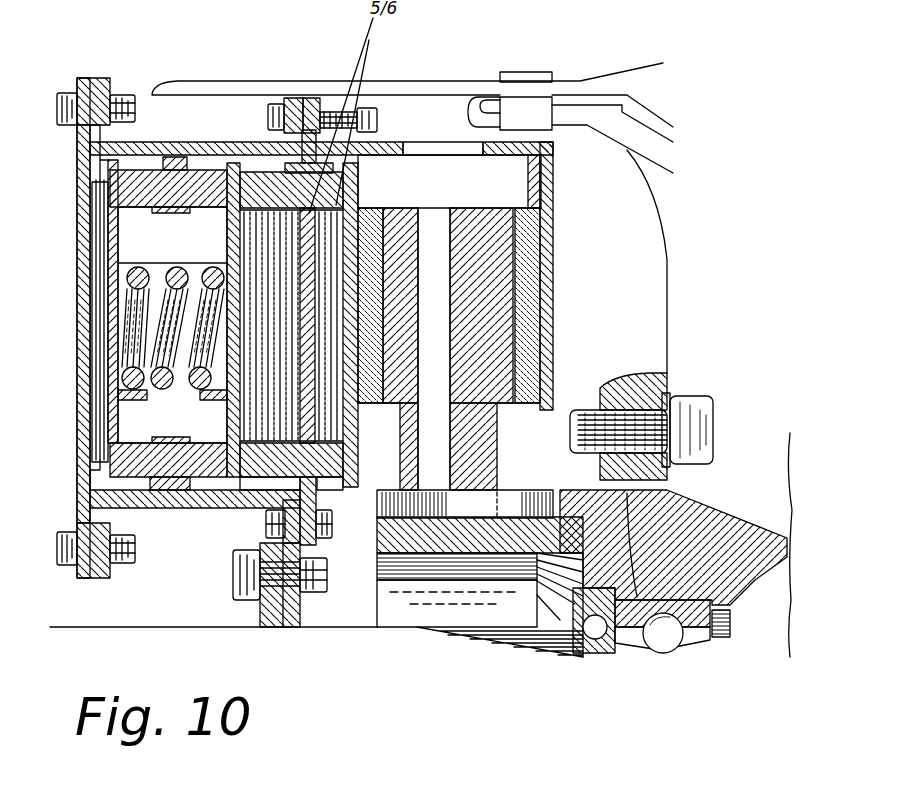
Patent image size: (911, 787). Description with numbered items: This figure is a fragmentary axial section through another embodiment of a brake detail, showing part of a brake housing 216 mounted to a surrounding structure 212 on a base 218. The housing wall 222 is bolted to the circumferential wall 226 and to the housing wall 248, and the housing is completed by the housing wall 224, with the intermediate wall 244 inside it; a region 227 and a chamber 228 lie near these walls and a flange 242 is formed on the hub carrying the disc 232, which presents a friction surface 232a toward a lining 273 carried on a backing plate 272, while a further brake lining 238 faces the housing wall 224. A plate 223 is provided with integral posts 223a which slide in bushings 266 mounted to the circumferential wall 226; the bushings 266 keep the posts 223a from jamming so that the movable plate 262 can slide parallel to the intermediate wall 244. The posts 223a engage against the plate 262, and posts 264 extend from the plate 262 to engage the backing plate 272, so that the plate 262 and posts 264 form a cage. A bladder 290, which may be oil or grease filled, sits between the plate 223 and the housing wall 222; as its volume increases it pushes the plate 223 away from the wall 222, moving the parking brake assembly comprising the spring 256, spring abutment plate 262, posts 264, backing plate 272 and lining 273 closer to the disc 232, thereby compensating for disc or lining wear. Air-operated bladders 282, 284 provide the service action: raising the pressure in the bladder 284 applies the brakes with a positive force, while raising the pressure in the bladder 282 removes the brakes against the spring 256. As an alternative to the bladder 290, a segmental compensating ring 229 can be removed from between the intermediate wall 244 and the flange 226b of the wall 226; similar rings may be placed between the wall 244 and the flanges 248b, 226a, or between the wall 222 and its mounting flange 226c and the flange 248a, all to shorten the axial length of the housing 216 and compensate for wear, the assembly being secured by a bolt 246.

The frame / mounting structure 212 is at (625, 38).
The housing 216 is at (76, 448).
The mounting base 218 is at (262, 625).
The housing wall 222 is at (77, 330).
The plate 223 is at (112, 232).
The integral posts 223a is at (140, 187).
The housing wall 224 is at (553, 243).
The circumferential wall 226 is at (375, 140).
The flange 226a is at (293, 98).
The flange 226b is at (330, 128).
The mounting flange 226c is at (100, 82).
The opening in housing wall 227 is at (452, 147).
The chamber 228 is at (462, 193).
The compensating ring 229 is at (322, 132).
The disc 232 is at (497, 425).
The friction surface 232a is at (380, 312).
The brake lining 238 is at (548, 318).
The hub flange 242 is at (445, 250).
The intermediate wall 244 is at (320, 160).
The bolt 246 is at (233, 568).
The housing wall 248 is at (150, 513).
The flange 248a is at (100, 560).
The flange 248b is at (315, 600).
The spring 256 is at (178, 263).
The movable plate 262 is at (228, 420).
The posts 264 is at (253, 187).
The bushings 266 is at (172, 163).
The backing plate 272 is at (358, 200).
The lining 273 is at (380, 360).
The bladder 282 is at (240, 492).
The bladder 284 is at (358, 487).
The bladder 290 is at (100, 380).